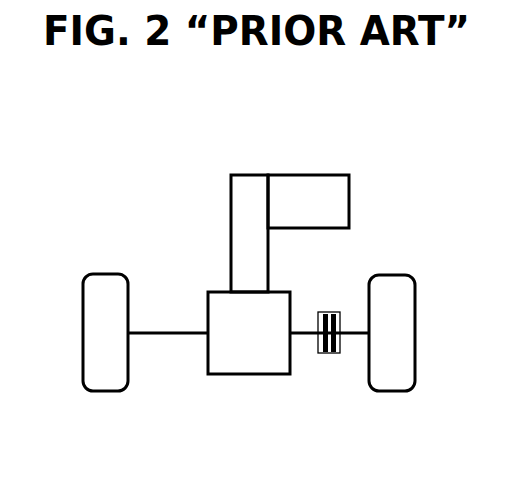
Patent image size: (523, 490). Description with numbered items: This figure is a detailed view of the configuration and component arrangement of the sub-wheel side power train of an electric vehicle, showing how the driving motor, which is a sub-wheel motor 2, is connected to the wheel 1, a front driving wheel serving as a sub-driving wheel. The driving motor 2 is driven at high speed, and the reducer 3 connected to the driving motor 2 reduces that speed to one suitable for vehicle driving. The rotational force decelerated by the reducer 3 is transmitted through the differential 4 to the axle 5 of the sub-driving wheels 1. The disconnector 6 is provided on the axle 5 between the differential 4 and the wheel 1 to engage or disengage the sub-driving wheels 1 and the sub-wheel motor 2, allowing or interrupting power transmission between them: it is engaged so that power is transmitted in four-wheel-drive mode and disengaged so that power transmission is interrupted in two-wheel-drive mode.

The sub-driving wheel 1 is at (393, 275).
The sub-wheel motor 2 is at (339, 175).
The reducer 3 is at (246, 175).
The differential 4 is at (246, 374).
The axle 5 is at (357, 335).
The disconnector 6 is at (324, 355).